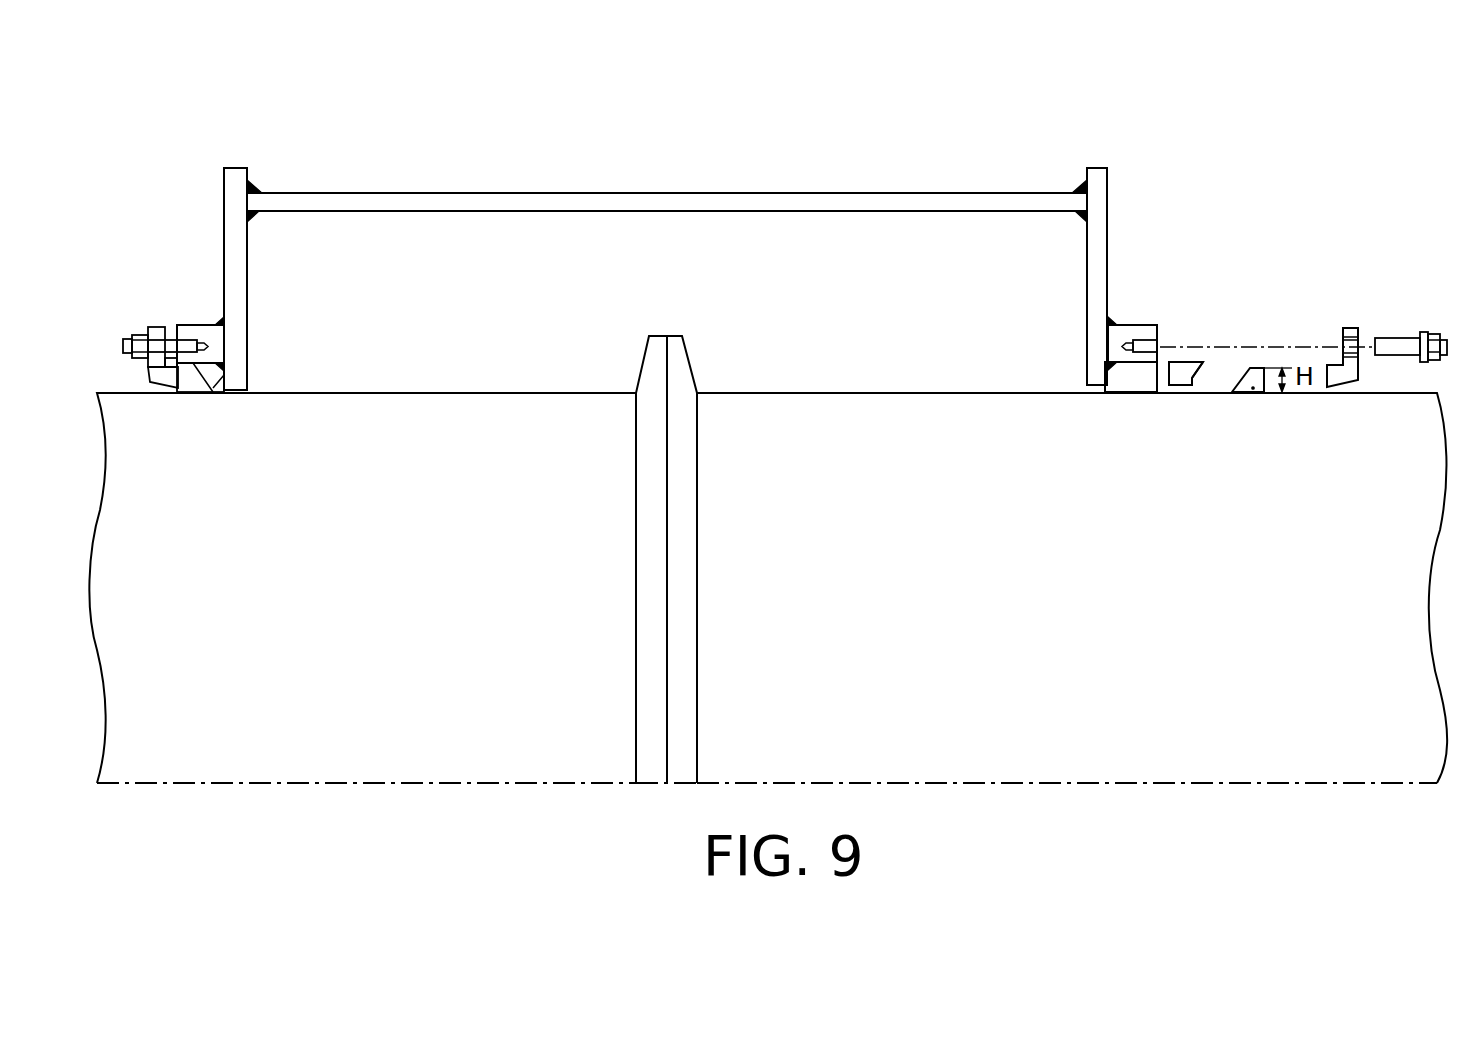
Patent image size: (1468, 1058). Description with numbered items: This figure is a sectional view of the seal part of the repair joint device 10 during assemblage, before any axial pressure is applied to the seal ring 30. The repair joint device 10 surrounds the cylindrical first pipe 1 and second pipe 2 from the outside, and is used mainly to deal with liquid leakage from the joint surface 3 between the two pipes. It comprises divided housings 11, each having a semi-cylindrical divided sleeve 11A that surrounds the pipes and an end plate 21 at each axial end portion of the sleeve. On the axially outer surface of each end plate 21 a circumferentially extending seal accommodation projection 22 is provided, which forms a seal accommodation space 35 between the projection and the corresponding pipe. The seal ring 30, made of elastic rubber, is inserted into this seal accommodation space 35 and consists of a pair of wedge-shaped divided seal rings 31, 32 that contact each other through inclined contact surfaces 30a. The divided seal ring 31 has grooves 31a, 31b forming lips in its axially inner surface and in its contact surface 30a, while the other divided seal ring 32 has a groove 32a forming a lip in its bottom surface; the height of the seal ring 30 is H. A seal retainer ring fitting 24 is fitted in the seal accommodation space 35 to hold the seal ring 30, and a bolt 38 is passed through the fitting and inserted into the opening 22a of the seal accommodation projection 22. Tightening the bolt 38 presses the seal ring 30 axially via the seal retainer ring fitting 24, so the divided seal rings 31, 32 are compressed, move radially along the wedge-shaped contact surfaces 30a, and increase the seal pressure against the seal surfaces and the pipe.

The first pipe 1 is at (883, 425).
The second pipe 2 is at (451, 425).
The joint surface 3 is at (667, 580).
The repair joint device 10 is at (668, 230).
The divided housing 11 is at (667, 159).
The divided sleeve 11A is at (528, 203).
The end plate 21 is at (232, 232).
The seal accommodation projection 22 is at (195, 325).
The opening 22a is at (1150, 342).
The seal retainer ring fitting 24 is at (1345, 328).
The seal ring 30 is at (1222, 435).
The contact surface 30a is at (1203, 373).
The divided seal ring 31 is at (1190, 414).
The groove 31a is at (1172, 372).
The groove 31b is at (1193, 377).
The divided seal ring 32 is at (1274, 453).
The groove 32a is at (1253, 391).
The seal accommodation space 35 is at (1125, 378).
The bolt 38 is at (1400, 338).